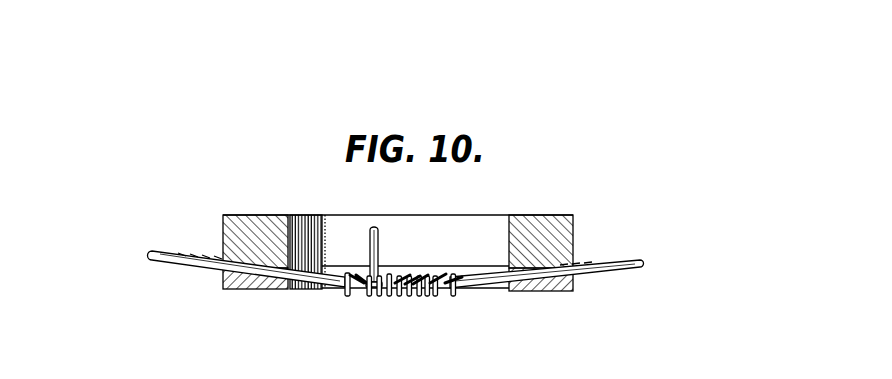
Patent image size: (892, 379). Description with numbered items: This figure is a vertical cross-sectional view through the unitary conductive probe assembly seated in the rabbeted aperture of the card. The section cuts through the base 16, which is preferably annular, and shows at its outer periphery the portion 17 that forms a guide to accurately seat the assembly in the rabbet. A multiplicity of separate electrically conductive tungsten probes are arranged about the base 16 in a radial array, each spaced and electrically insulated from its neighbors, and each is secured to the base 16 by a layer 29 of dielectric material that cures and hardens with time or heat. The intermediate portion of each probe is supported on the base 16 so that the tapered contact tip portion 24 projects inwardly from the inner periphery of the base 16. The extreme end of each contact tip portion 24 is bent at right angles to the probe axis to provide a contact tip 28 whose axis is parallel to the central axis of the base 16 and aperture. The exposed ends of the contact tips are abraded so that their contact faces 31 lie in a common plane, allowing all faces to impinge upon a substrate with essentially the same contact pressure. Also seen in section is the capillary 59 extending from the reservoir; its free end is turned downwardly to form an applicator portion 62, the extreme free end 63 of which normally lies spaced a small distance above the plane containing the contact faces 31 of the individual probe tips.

The base 16 is at (262, 222).
The portion of the outer periphery of the base 17 is at (572, 230).
The contact tip portion 24 is at (447, 273).
The contact tip 28 is at (344, 291).
The layer of dielectric material 29 is at (249, 290).
The contact faces 31 is at (396, 296).
The capillary 59 is at (190, 266).
The applicator portion 62 is at (380, 233).
The extreme free end 63 is at (372, 290).